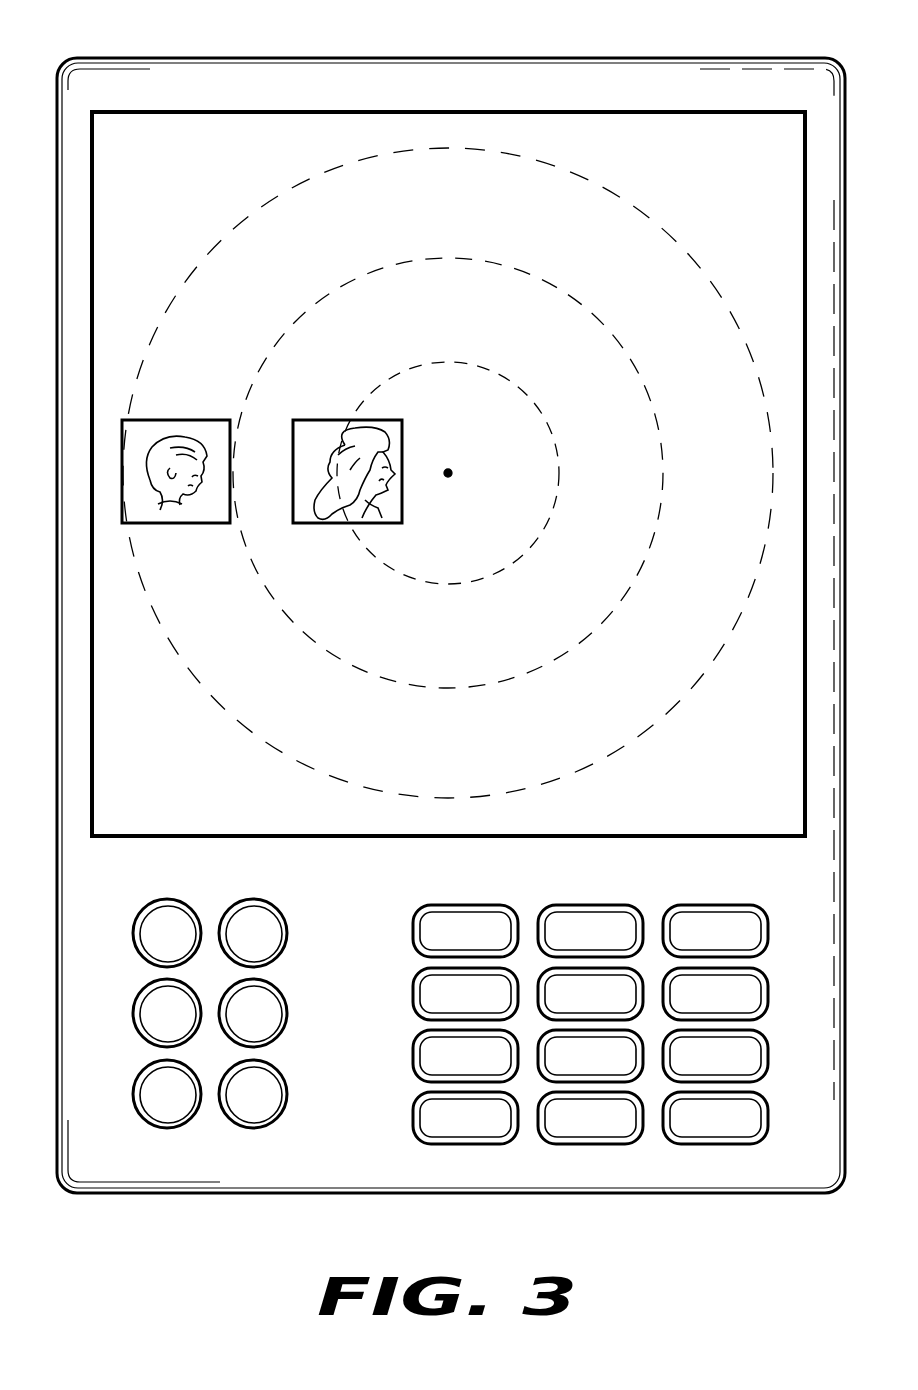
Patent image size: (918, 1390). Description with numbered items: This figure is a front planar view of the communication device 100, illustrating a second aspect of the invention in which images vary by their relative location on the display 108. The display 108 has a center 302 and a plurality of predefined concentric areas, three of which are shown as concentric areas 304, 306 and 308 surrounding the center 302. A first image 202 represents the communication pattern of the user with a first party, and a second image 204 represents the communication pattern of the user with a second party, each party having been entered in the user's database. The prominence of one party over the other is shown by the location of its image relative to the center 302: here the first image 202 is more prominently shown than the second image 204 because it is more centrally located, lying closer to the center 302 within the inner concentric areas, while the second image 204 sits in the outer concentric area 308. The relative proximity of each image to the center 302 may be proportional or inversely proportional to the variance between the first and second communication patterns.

The communication device 100 is at (468, 57).
The display 108 is at (350, 838).
The first image 202 is at (326, 418).
The second image 204 is at (180, 418).
The center 302 is at (452, 473).
The first concentric area 304 is at (537, 411).
The second concentric area 306 is at (616, 336).
The third concentric area 308 is at (706, 277).